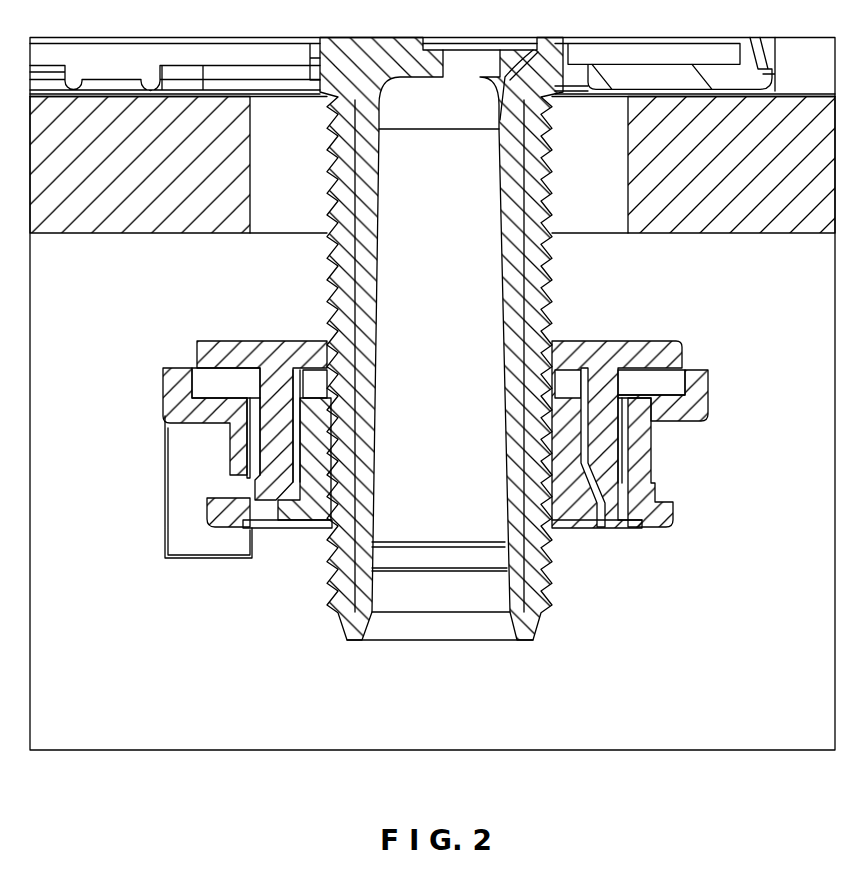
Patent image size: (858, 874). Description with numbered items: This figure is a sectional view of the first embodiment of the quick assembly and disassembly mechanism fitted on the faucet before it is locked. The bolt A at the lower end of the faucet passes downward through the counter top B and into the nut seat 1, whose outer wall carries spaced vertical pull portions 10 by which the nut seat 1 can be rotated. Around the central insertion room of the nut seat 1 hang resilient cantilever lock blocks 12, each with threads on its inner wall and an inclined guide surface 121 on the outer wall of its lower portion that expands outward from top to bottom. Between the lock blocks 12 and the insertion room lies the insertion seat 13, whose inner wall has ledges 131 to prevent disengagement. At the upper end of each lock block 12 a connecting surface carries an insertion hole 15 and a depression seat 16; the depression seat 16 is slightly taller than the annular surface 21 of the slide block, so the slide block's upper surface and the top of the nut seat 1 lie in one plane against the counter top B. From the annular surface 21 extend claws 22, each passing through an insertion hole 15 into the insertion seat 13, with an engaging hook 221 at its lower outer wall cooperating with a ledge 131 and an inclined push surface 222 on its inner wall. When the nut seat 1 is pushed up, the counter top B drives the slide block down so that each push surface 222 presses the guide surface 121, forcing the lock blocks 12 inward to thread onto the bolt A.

The bolt A is at (537, 272).
The counter top B is at (787, 215).
The nut seat 1 is at (187, 402).
The depression seat 16 is at (200, 380).
The vertical pull portions 10 is at (187, 482).
The insertion hole 15 is at (227, 423).
The ledges 131 is at (253, 473).
The insertion seat 13 is at (253, 512).
The cantilever lock blocks 12 is at (300, 522).
The engaging hook 221 is at (263, 510).
The annular surface 21 is at (665, 353).
The claws 22 is at (608, 448).
The inclined push surface 222 is at (630, 483).
The inclined guide surface 121 is at (592, 500).